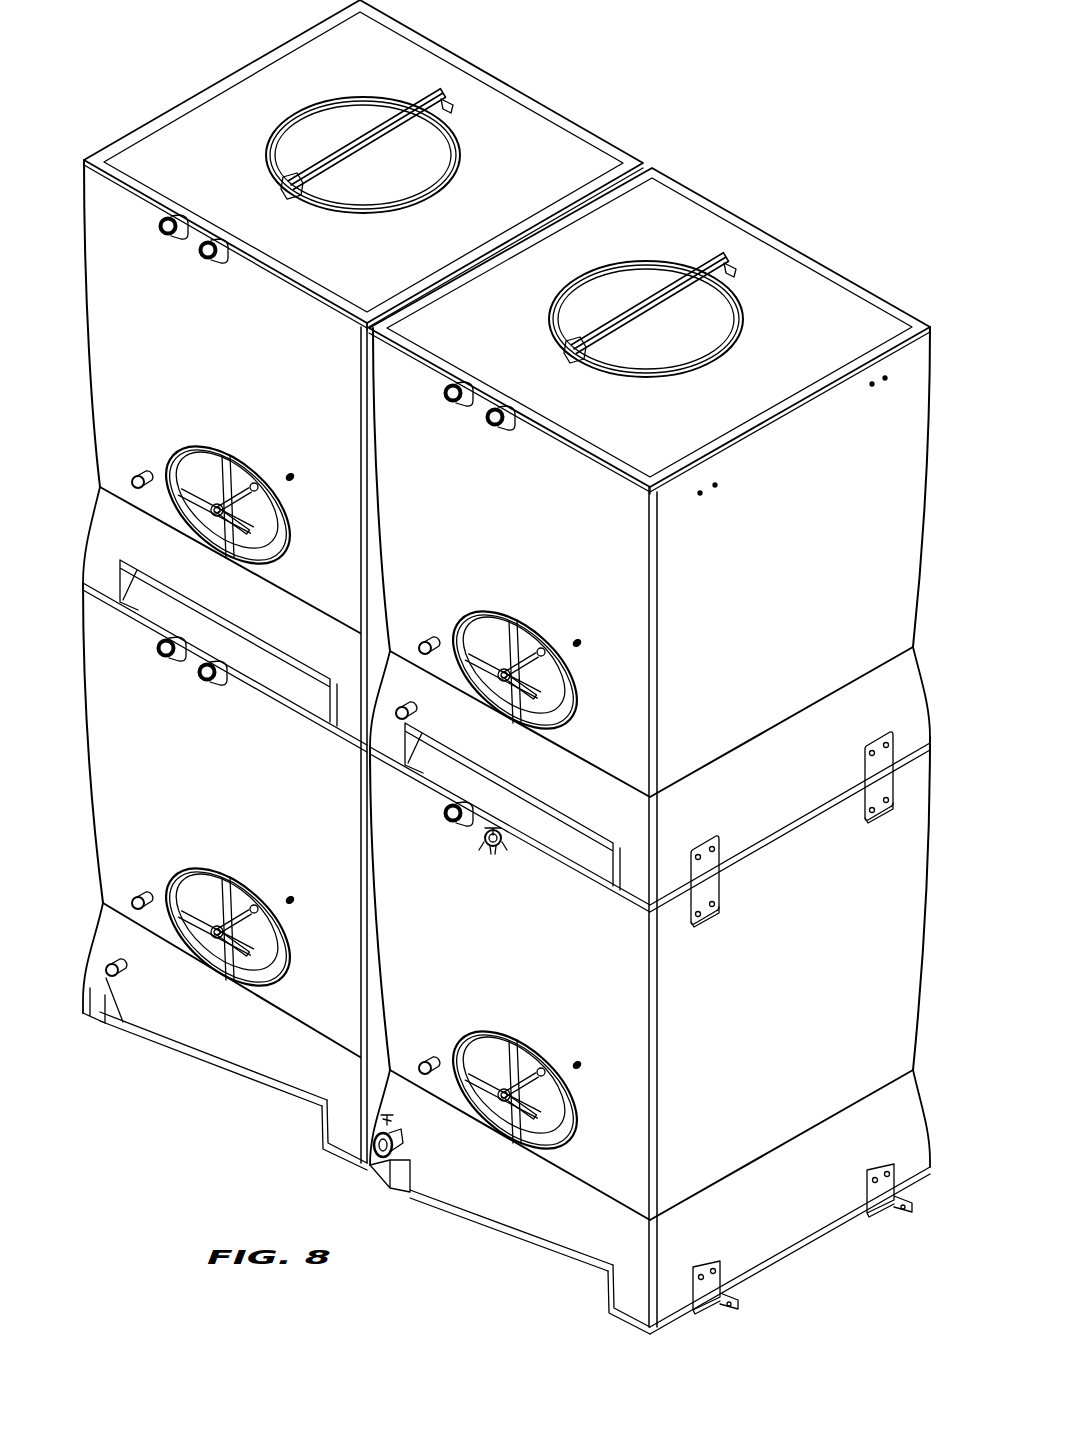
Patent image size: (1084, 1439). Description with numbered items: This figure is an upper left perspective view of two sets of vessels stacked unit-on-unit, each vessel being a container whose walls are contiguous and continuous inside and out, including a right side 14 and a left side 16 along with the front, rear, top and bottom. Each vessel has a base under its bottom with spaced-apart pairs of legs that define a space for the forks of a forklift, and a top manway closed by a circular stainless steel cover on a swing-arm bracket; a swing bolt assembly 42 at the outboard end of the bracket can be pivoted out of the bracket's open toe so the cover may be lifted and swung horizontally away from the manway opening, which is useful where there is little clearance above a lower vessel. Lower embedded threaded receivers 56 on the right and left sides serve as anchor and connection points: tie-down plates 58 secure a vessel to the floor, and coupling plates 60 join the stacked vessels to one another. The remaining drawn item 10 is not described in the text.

The modular tank system 10 is at (195, 40).
The right side 14 is at (900, 512).
The left side 16 is at (104, 128).
The swing bolt assembly 42 is at (288, 178).
The lower embedded threaded receiver 56 is at (872, 383).
The tie-down plate 58 is at (885, 1200).
The coupling plate 60 is at (872, 810).